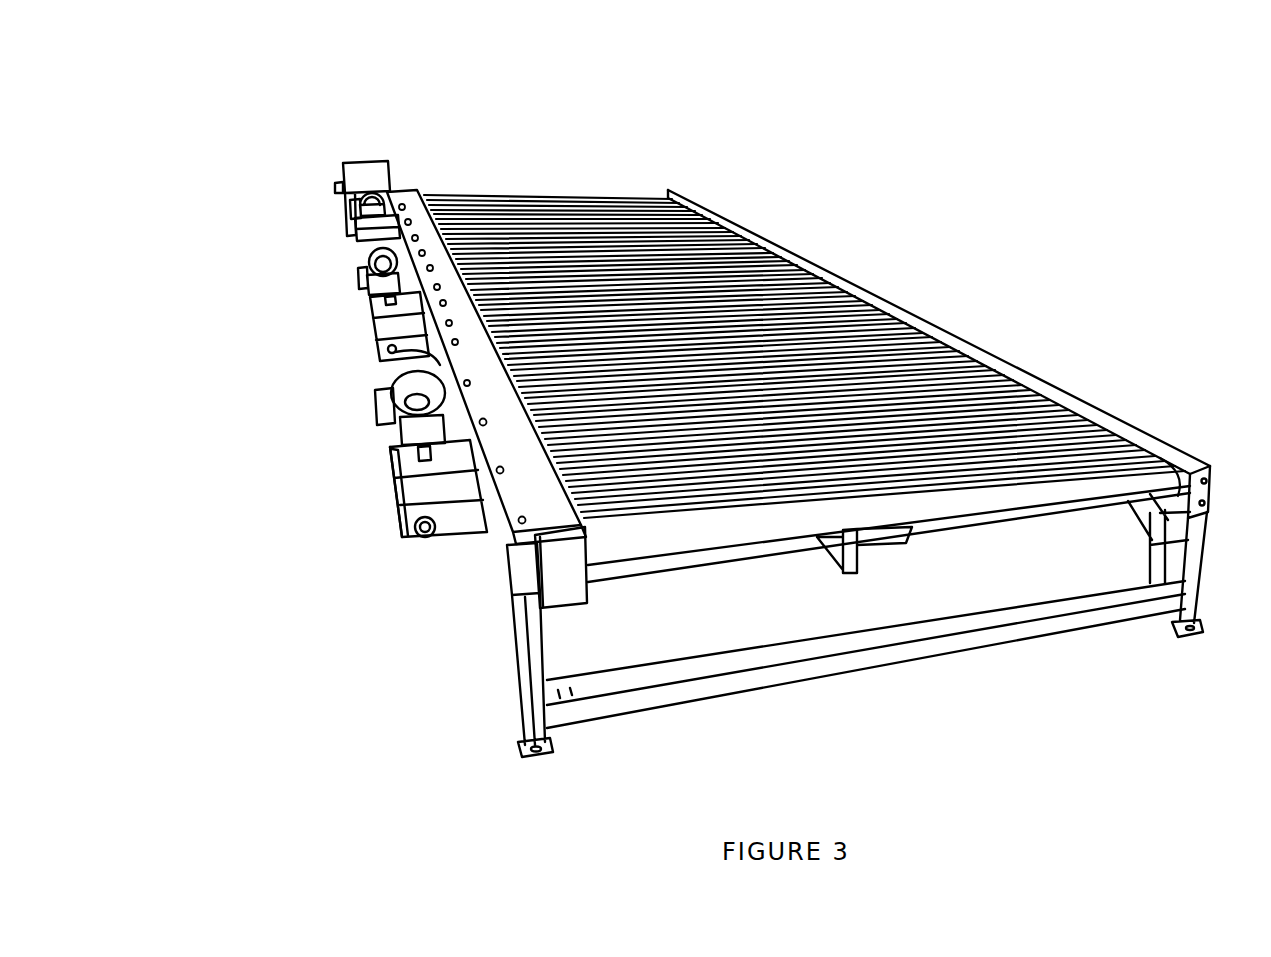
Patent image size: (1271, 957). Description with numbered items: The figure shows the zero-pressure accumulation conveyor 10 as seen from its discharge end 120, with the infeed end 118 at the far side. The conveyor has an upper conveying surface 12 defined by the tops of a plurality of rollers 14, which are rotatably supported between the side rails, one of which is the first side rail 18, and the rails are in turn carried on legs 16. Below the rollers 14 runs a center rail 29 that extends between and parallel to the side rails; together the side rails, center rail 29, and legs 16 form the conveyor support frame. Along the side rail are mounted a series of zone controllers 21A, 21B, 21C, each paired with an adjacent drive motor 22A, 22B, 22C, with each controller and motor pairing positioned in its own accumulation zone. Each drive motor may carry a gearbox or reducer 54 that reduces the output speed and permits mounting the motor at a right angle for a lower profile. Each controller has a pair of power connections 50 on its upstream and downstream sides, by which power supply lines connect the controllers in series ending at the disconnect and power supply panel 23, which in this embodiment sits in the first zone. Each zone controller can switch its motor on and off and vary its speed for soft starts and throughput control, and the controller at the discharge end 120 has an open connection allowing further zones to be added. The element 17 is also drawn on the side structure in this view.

The zero-pressure accumulation conveyor 10 is at (731, 112).
The infeed end 118 is at (576, 155).
The upper conveying surface 12 is at (732, 238).
The rollers 14 is at (848, 300).
The side mounting plate 17 is at (430, 230).
The first side rail 18 is at (1000, 368).
The legs 16 is at (1192, 592).
The discharge end 120 is at (1065, 585).
The center rail 29 is at (858, 552).
The disconnect and power supply panel 23 is at (363, 165).
The drive motor 22A is at (343, 198).
The zone controller 21A is at (357, 238).
The drive motor 22B is at (362, 266).
The zone controller 21B is at (382, 328).
The drive motor 22C is at (392, 402).
The zone controller 21C is at (402, 493).
The gearbox or reducer 54 is at (390, 452).
The power connections 50 is at (428, 538).